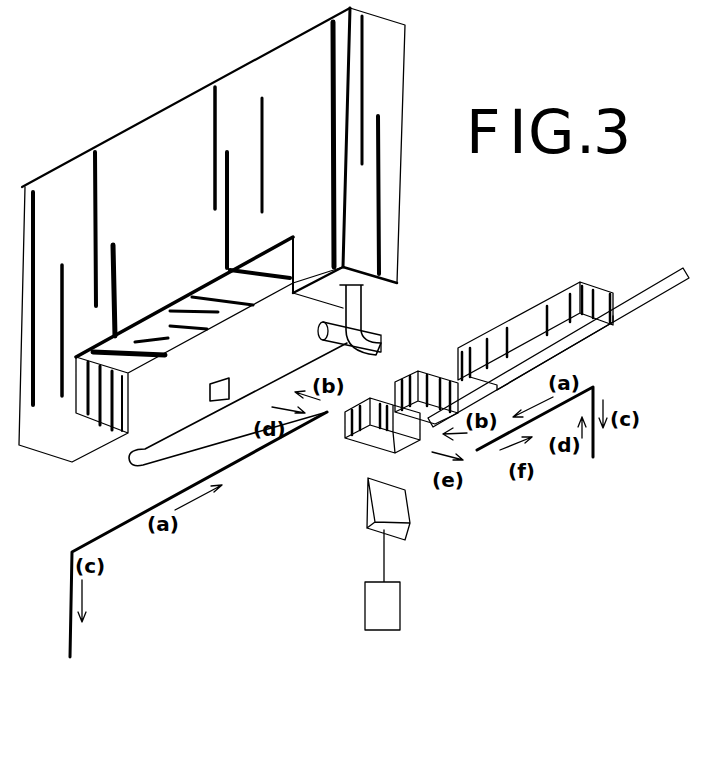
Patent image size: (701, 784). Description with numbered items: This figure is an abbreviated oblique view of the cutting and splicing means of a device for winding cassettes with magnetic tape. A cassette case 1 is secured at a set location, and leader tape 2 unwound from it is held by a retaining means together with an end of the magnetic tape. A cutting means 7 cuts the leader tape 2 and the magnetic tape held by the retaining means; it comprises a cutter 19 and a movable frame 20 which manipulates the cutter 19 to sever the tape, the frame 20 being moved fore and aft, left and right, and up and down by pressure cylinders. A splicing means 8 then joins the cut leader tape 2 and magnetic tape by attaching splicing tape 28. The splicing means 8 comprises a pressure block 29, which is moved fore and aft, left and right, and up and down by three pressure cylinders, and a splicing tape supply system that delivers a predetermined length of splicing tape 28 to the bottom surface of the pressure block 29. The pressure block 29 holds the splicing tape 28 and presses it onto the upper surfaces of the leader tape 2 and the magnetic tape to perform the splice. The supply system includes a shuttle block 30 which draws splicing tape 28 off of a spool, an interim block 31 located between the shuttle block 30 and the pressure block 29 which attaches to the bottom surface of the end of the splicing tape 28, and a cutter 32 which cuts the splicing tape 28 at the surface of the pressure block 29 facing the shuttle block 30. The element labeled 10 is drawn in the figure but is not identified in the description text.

The cassette case 1 is at (261, 61).
The leader tape 2 is at (307, 363).
The cutting means 7 is at (234, 374).
The splicing means 8 is at (449, 327).
The hook 10 is at (378, 331).
The cutter 19 is at (210, 392).
The movable frame 20 is at (260, 451).
The splicing tape 28 is at (657, 283).
The pressure block 29 is at (343, 440).
The shuttle block 30 is at (563, 282).
The interim block 31 is at (423, 356).
The cutter 32 is at (408, 523).